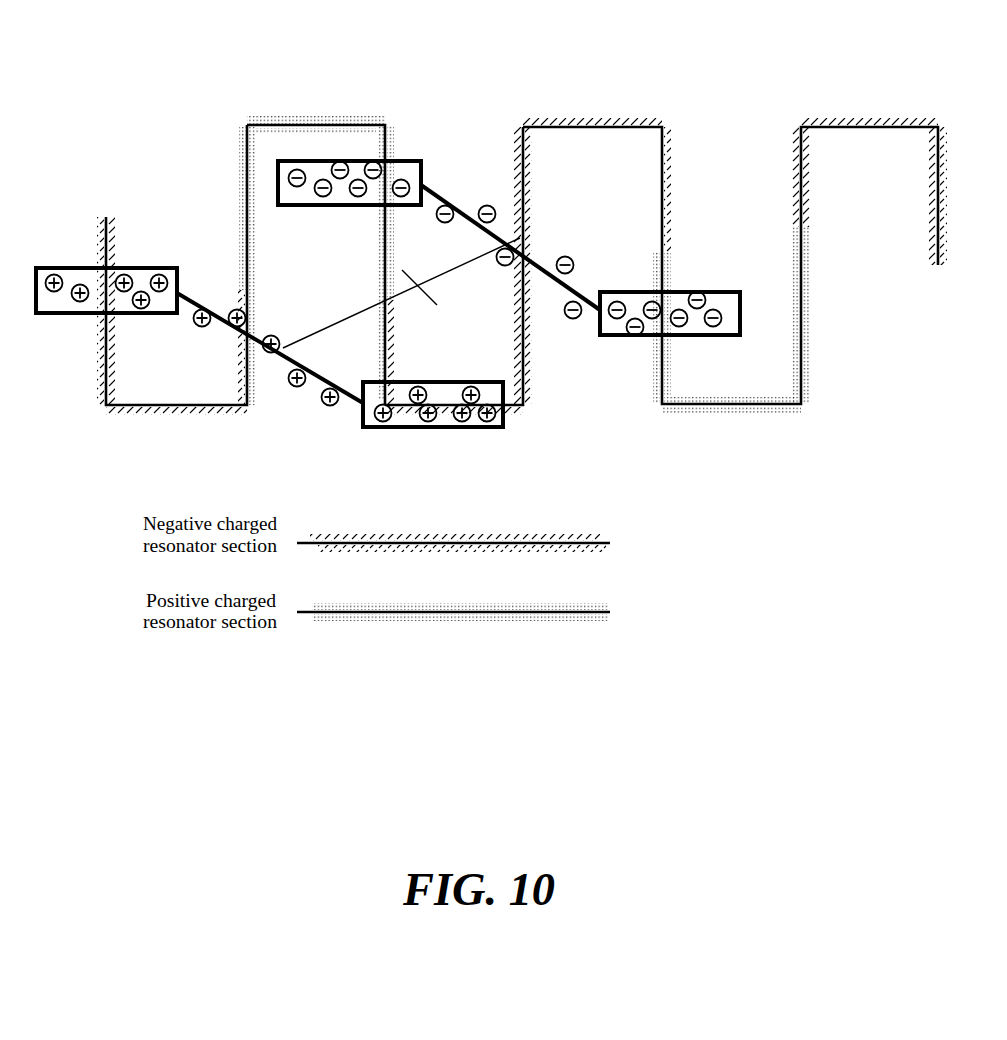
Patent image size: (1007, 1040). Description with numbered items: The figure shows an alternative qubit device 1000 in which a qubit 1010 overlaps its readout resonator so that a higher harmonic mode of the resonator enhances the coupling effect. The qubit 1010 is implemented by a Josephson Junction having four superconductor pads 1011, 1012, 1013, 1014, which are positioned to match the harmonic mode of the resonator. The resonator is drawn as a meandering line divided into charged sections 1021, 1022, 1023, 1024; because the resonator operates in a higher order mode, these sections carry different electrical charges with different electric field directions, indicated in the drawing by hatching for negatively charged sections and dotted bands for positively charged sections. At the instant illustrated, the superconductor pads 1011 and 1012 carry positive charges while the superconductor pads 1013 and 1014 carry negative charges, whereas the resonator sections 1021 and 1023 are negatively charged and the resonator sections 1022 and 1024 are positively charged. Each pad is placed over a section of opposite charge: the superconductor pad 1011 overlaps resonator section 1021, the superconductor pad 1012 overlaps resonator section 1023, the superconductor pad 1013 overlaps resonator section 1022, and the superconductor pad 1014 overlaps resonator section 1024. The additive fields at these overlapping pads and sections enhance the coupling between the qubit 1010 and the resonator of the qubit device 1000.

The qubit device 1000 is at (175, 55).
The qubit 1010 is at (420, 299).
The superconductor pad 1011 is at (80, 268).
The superconductor pad 1012 is at (398, 428).
The superconductor pad 1013 is at (420, 163).
The superconductor pad 1014 is at (705, 292).
The resonator section 1021 is at (96, 343).
The resonator section 1022 is at (370, 120).
The resonator section 1023 is at (532, 412).
The resonator section 1024 is at (672, 240).